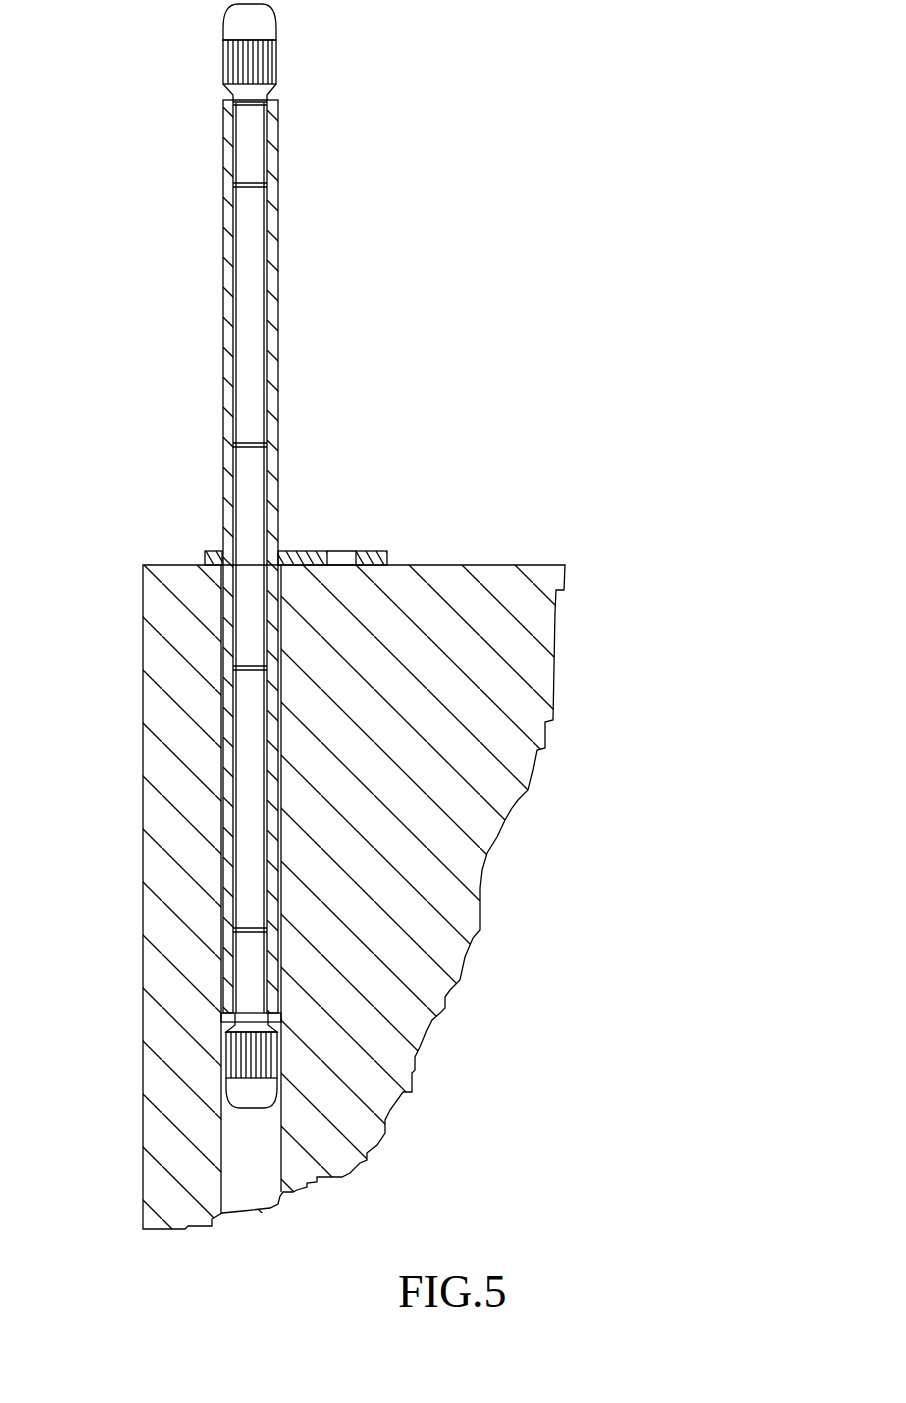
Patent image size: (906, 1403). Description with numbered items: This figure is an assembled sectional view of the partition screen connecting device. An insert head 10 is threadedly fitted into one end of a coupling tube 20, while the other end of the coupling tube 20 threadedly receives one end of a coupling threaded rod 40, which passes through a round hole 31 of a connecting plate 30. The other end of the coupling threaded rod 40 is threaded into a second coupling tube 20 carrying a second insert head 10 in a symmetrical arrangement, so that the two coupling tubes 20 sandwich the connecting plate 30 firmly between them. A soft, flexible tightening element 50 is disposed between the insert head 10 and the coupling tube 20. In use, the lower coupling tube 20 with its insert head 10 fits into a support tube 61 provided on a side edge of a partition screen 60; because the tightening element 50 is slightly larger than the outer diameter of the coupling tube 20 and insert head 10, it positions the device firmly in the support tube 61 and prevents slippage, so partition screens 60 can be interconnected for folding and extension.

The insert head 10 is at (231, 50).
The coupling tube 20 is at (232, 932).
The connecting plate 30 is at (384, 552).
The round hole 31 is at (341, 552).
The coupling threaded rod 40 is at (247, 488).
The tightening element 50 is at (222, 1018).
The partition screen 60 is at (155, 1132).
The support tube 61 is at (255, 1195).